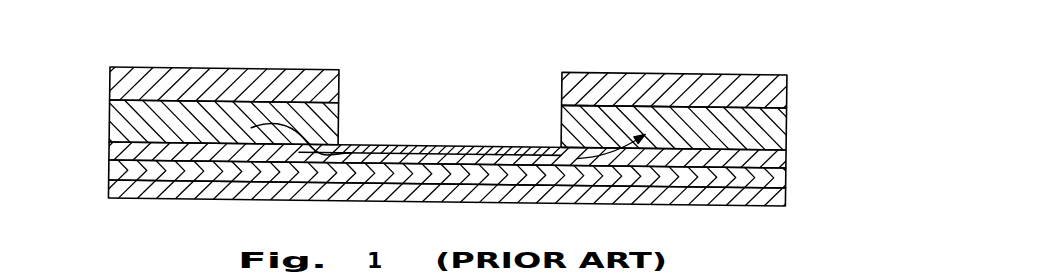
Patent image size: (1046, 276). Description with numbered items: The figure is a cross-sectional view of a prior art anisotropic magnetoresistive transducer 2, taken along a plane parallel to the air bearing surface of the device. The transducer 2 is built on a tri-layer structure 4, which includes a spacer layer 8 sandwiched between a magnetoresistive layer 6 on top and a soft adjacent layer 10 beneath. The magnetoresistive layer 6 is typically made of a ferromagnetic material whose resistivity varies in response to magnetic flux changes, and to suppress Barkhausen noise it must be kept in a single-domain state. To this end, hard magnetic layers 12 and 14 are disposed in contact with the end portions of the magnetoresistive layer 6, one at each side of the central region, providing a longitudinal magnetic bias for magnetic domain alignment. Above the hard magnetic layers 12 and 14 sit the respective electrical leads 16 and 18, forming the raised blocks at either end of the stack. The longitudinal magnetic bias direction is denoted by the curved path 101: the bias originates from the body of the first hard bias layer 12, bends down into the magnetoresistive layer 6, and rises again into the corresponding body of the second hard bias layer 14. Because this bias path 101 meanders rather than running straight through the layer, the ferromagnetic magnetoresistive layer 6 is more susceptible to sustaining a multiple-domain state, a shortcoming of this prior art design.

The transducer 2 is at (718, 52).
The tri-layer structure 4 is at (100, 140).
The magnetoresistive layer 6 is at (493, 147).
The spacer layer 8 is at (775, 178).
The soft adjacent layer 10 is at (723, 207).
The hard magnetic layer 12 is at (125, 117).
The hard magnetic layer 14 is at (777, 131).
The electrical lead 16 is at (118, 74).
The electrical lead 18 is at (775, 91).
The longitudinal magnetic bias direction 101 is at (403, 147).